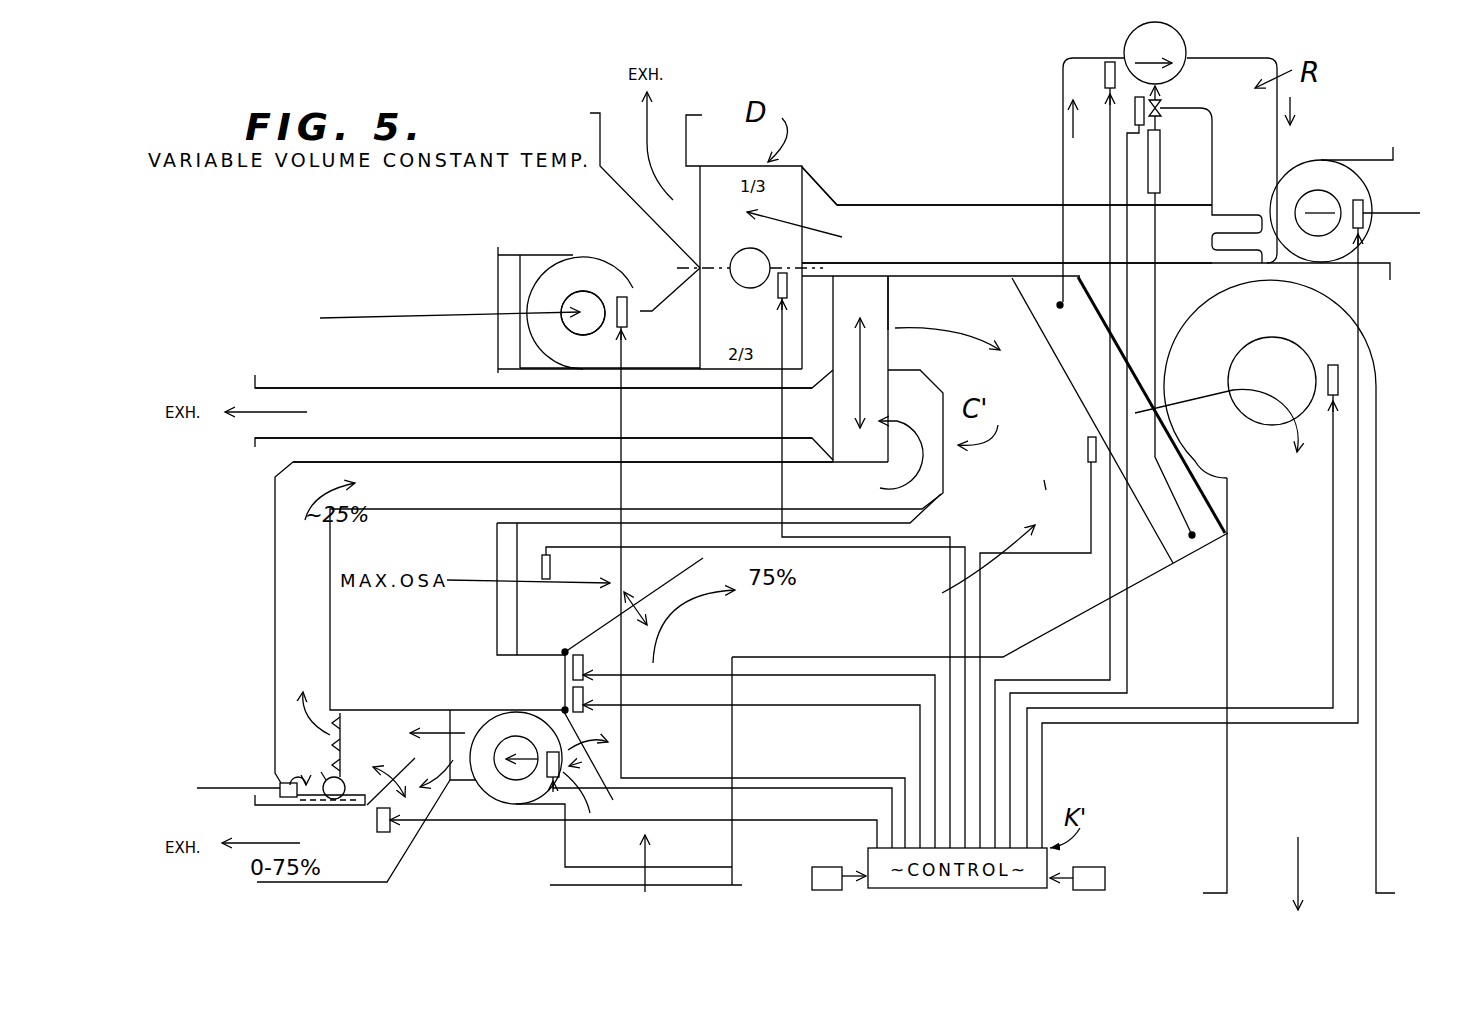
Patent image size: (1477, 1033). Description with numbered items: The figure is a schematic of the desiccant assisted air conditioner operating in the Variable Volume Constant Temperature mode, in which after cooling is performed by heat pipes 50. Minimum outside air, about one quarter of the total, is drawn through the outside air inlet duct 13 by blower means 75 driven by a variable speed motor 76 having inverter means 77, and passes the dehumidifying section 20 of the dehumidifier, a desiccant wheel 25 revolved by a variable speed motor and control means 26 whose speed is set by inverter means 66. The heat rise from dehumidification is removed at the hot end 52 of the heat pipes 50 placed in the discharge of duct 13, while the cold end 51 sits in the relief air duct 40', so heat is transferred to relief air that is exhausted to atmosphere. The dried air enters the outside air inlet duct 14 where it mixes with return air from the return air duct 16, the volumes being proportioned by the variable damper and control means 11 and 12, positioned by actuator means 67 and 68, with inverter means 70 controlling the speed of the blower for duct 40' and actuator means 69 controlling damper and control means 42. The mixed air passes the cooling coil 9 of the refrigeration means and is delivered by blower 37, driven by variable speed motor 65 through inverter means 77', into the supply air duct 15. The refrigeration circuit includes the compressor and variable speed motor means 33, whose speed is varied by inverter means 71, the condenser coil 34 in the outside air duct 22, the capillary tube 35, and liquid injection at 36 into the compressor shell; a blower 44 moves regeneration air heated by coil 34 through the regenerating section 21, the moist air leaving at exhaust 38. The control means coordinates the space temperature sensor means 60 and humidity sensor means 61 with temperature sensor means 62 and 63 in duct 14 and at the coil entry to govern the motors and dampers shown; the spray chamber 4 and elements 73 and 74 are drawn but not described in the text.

The spray chamber 4 is at (297, 781).
The cooling coil 9 is at (1080, 372).
The variable damper and control means 11 is at (598, 772).
The variable damper and control means 12 is at (681, 577).
The outside air inlet duct 13 is at (611, 349).
The outside air inlet duct 14 is at (980, 709).
The supply air duct 15 is at (1268, 718).
The return air duct 16 is at (629, 873).
The dehumidifying section 20 is at (714, 360).
The regenerating section 21 is at (786, 180).
The outside air duct 22 is at (1007, 234).
The desiccant wheel 25 is at (808, 207).
The variable speed motor and control means 26 is at (768, 250).
The compressor and variable speed motor means 33 is at (1190, 38).
The condenser coil 34 is at (1229, 214).
The capillary tube 35 is at (1161, 160).
The liquid injection point 36 is at (1166, 92).
The blower 37 is at (1370, 332).
The exhaust 38 is at (610, 112).
The relief air duct 40' is at (544, 547).
The damper and control means 42 is at (399, 768).
The blower 44 is at (1312, 166).
The heat pipes 50 is at (886, 357).
The cold end 51 is at (848, 417).
The hot end 52 is at (880, 320).
The temperature sensor means 60 is at (1100, 867).
The humidity sensor means 61 is at (822, 866).
The temperature sensor means 62 is at (551, 568).
The temperature sensor means 63 is at (1087, 448).
The variable speed motor 65 is at (1283, 350).
The inverter means 66 is at (777, 292).
The actuator means 67 is at (587, 664).
The actuator means 68 is at (586, 692).
The actuator means 69 is at (377, 821).
The inverter means 70 is at (562, 758).
The inverter means 71 is at (1104, 72).
The damper actuator 73 is at (1366, 206).
The temperature sensor 74 is at (1134, 113).
The blower means 75 is at (590, 247).
The variable speed motor 76 is at (590, 292).
The inverter means 77 is at (761, 558).
The inverter means 77' is at (1224, 602).